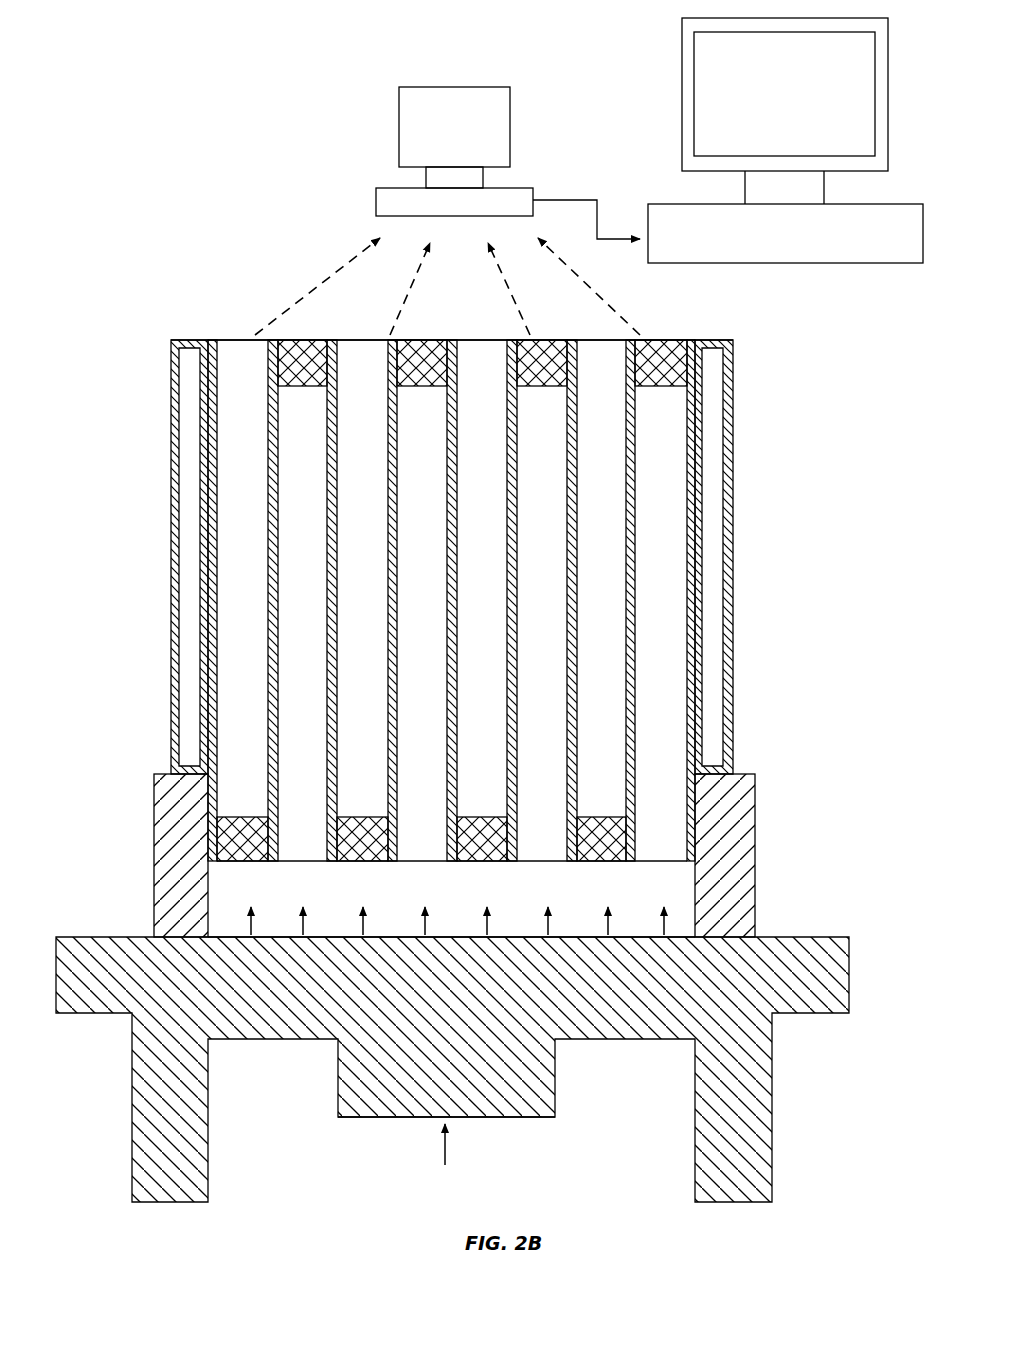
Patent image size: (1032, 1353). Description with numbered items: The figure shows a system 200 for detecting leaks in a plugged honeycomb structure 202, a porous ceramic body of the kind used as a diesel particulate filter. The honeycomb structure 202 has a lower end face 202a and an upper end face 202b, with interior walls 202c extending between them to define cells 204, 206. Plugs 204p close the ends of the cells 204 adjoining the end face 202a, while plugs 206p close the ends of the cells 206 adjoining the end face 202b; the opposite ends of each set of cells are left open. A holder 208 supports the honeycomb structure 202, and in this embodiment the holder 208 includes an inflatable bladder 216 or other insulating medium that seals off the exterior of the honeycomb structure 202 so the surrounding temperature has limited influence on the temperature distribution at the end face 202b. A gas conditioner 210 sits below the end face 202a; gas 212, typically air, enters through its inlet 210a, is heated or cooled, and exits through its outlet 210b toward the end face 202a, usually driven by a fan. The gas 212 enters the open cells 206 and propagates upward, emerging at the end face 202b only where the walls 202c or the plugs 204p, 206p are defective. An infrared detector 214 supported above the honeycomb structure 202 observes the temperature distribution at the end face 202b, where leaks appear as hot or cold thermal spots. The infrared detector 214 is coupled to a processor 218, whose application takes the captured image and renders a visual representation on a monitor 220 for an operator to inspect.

The system 200 is at (266, 214).
The plugged honeycomb structure 202 is at (705, 418).
The end face 202a is at (237, 862).
The end face 202b is at (230, 340).
The interior walls 202c is at (632, 717).
The cells 204 is at (232, 617).
The plugs 204p is at (232, 832).
The cells 206 is at (675, 537).
The plugs 206p is at (672, 360).
The holder 208 is at (755, 812).
The gas conditioner 210 is at (568, 1024).
The inlet 210a is at (517, 1117).
The outlet 210b is at (679, 935).
The gas 212 is at (457, 1039).
The infrared detector 214 is at (450, 85).
The inflatable bladder 216 is at (178, 497).
The processor 218 is at (833, 247).
The monitor 220 is at (688, 110).